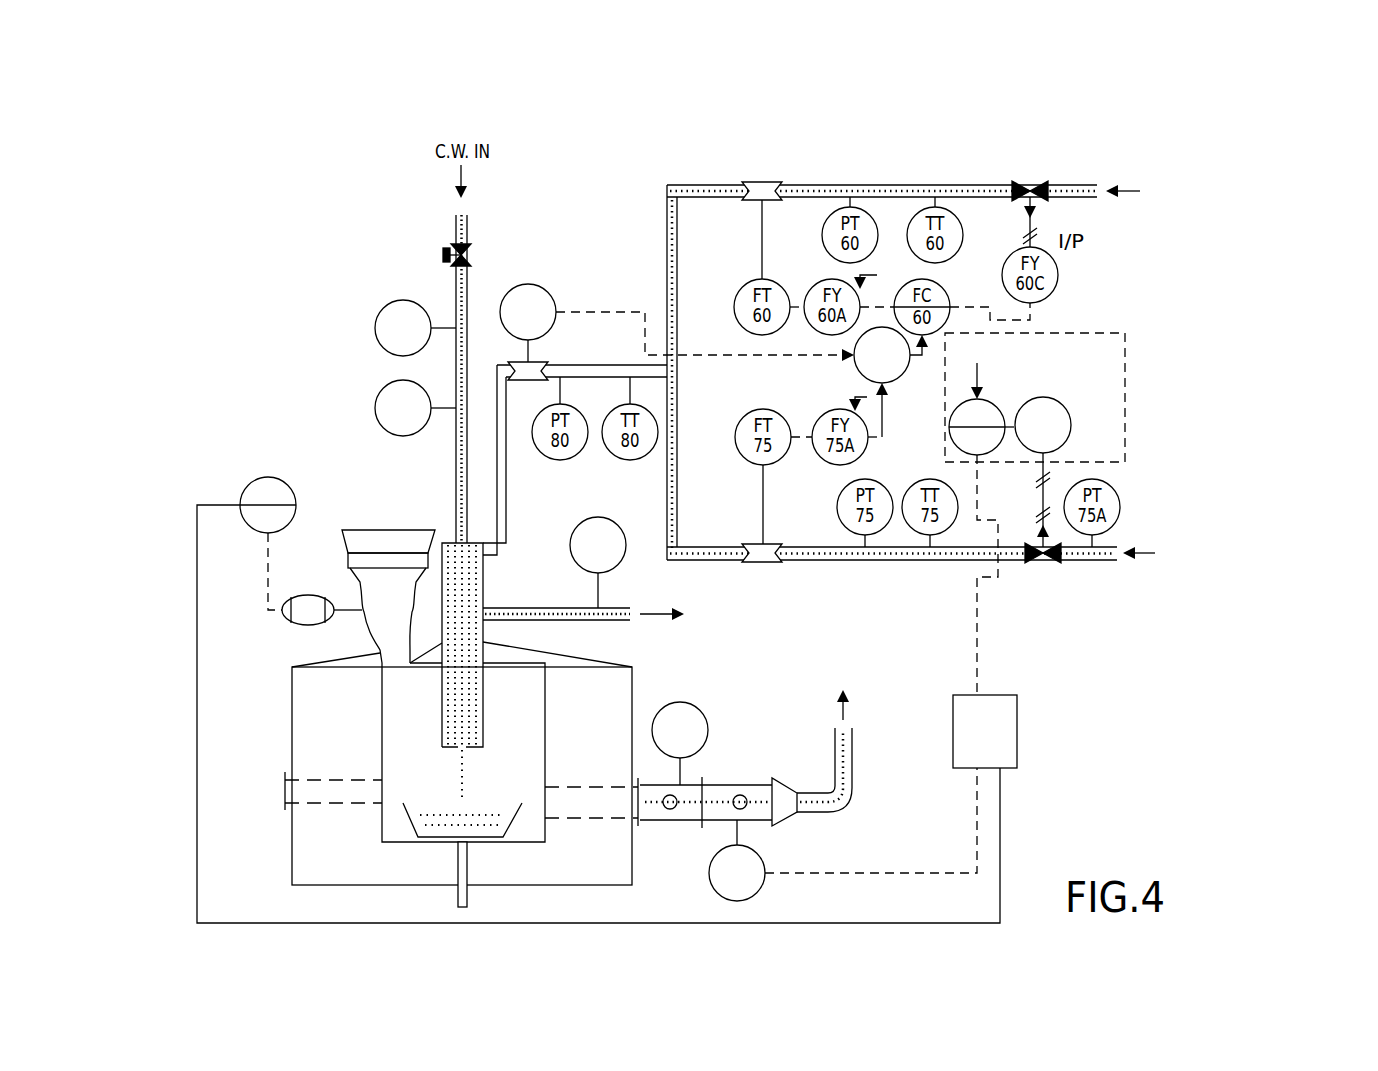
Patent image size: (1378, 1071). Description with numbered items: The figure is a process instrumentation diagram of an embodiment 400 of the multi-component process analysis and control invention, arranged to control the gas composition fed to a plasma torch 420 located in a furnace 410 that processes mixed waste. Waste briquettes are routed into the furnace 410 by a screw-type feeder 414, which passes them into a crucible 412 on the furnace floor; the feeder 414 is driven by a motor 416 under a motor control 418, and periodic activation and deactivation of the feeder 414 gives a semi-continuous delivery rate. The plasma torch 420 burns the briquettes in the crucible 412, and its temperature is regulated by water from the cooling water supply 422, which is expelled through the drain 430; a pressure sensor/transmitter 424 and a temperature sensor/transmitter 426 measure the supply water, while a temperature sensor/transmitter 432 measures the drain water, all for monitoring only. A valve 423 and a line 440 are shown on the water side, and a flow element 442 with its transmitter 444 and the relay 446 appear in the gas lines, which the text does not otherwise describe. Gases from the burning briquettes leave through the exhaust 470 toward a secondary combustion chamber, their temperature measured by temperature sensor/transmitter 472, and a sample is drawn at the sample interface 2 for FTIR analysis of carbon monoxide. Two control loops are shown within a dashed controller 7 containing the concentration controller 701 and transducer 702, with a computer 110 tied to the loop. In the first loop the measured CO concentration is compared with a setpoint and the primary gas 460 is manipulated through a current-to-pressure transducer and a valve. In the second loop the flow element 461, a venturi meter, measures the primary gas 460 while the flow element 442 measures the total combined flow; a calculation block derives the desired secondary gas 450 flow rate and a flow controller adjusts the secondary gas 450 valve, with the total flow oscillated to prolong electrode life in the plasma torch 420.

The embodiment 400 is at (1322, 198).
The furnace 410 is at (292, 717).
The crucible 412 is at (500, 800).
The feeder 414 is at (392, 530).
The motor 416 is at (309, 595).
The motor control 418 is at (252, 482).
The plasma torch 420 is at (483, 595).
The cooling water supply 422 is at (456, 291).
The cooling water valve 423 is at (456, 246).
The pressure sensor/transmitter 424 is at (375, 329).
The temperature sensor/transmitter 426 is at (378, 401).
The drain 430 is at (605, 608).
The temperature sensor/transmitter 432 is at (622, 530).
The gas supply pipe 440 is at (506, 487).
The flow element 442 is at (536, 363).
The flow transmitter FT 80 444 is at (552, 293).
The flow computing relay FY 60B 446 is at (857, 366).
The secondary gas 450 is at (1090, 185).
The primary gas 460 is at (1097, 561).
The flow element 461 is at (762, 182).
The exhaust 470 is at (853, 790).
The temperature sensor/transmitter 472 is at (709, 732).
The concentration controller CC 75 701 is at (996, 406).
The current-to-pneumatic converter CY 75 702 is at (1060, 405).
The controller 7 is at (1126, 333).
The sample interface 2 is at (709, 873).
The control computer 110 is at (1006, 746).